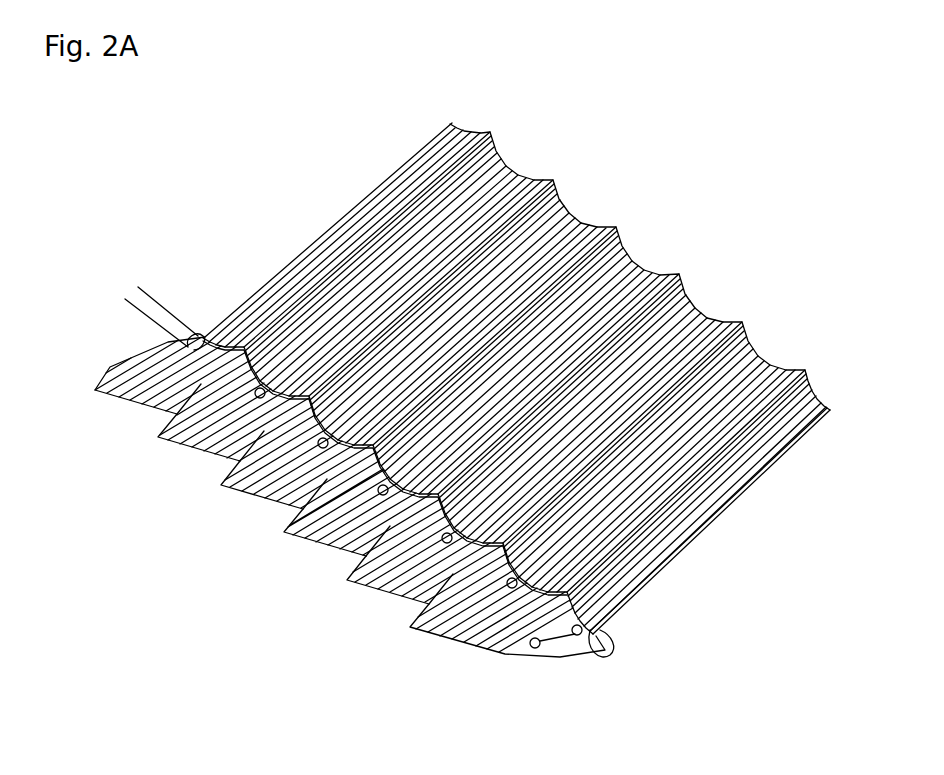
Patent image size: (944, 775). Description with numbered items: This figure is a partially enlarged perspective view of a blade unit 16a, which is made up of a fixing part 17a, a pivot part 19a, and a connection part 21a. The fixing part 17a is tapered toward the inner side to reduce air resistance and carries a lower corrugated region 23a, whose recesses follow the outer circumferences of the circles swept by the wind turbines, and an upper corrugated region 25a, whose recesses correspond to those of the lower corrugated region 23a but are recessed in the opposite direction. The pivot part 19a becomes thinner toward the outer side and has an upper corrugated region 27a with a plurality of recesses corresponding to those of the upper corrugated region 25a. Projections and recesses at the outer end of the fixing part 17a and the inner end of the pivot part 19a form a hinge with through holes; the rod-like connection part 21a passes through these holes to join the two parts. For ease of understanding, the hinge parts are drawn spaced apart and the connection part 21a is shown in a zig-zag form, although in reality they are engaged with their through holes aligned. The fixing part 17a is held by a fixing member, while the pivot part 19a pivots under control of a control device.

The blade unit 16a is at (804, 259).
The fixing part 17a is at (519, 652).
The pivot part 19a is at (660, 583).
The connection part 21a is at (610, 652).
The lower corrugated region 23a is at (348, 579).
The upper corrugated region 25a is at (297, 515).
The upper corrugated region 27a is at (645, 268).